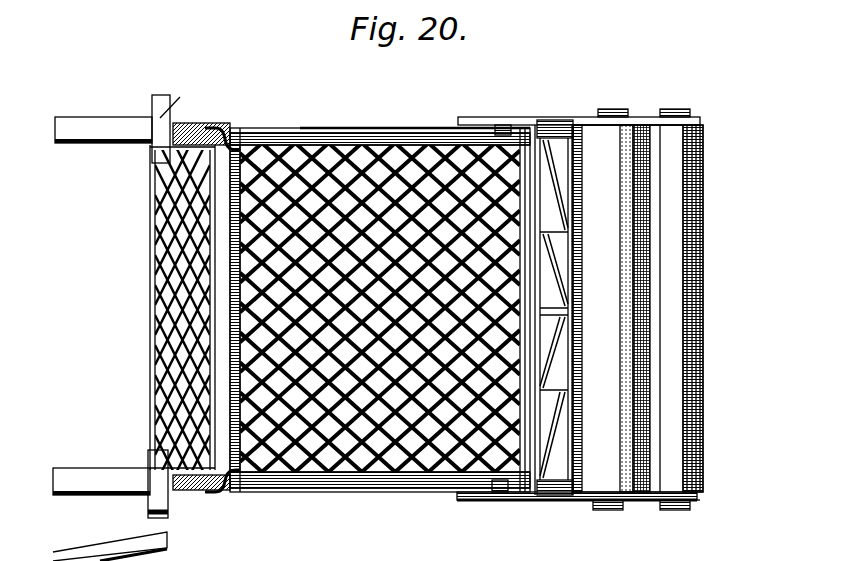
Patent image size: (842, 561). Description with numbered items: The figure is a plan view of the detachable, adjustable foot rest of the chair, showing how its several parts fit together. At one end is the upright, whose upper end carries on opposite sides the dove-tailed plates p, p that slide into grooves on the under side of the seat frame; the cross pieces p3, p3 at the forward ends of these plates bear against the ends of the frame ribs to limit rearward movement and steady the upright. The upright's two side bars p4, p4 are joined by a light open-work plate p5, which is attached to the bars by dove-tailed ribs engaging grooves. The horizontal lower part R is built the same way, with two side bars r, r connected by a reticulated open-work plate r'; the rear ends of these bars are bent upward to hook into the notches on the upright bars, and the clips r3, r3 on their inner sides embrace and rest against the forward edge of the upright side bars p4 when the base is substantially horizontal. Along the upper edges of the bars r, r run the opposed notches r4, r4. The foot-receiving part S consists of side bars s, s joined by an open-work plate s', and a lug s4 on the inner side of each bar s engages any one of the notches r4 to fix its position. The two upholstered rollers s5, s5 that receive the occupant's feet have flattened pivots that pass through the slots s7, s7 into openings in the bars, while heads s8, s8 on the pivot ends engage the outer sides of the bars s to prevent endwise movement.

The dove-tailed plate p is at (107, 130).
The cross piece p3 is at (182, 520).
The side bar p4 is at (200, 118).
The open-work plate p5 is at (150, 358).
The side bar r is at (380, 312).
The open-work plate r' is at (380, 280).
The clip r3 is at (225, 118).
The notch r4 is at (425, 128).
The horizontal lower part R is at (380, 280).
The side bar s is at (578, 313).
The open-work plate s' is at (540, 329).
The lug s4 is at (502, 117).
The roller s5 is at (612, 109).
The slot s7 is at (650, 117).
The head s8 is at (603, 510).
The foot-receiving part S is at (647, 308).